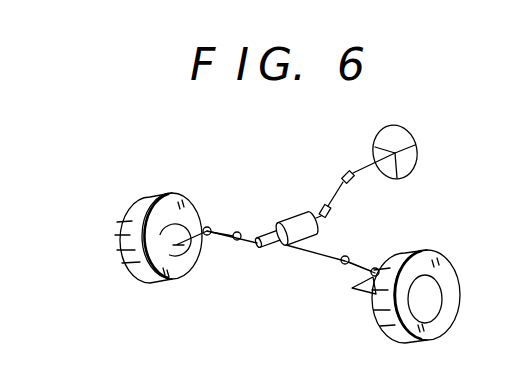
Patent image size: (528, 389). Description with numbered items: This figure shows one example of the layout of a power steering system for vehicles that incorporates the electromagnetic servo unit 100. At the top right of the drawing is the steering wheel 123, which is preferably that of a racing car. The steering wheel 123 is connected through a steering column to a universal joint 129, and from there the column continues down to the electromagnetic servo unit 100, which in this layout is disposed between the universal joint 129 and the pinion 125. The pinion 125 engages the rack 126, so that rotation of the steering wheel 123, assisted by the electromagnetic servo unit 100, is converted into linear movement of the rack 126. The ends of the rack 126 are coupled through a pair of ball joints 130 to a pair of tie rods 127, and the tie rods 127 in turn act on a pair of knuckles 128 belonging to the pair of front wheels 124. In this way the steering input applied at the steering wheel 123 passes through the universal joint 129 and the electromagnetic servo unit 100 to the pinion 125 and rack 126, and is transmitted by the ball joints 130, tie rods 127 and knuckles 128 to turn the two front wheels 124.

The electromagnetic servo unit 100 is at (305, 240).
The steering wheel 123 is at (402, 139).
The front wheels 124 is at (118, 227).
The pinion 125 is at (260, 240).
The rack 126 is at (280, 253).
The tie rods 127 is at (224, 238).
The knuckles 128 is at (174, 268).
The universal joint 129 is at (335, 193).
The ball joints 130 is at (235, 233).